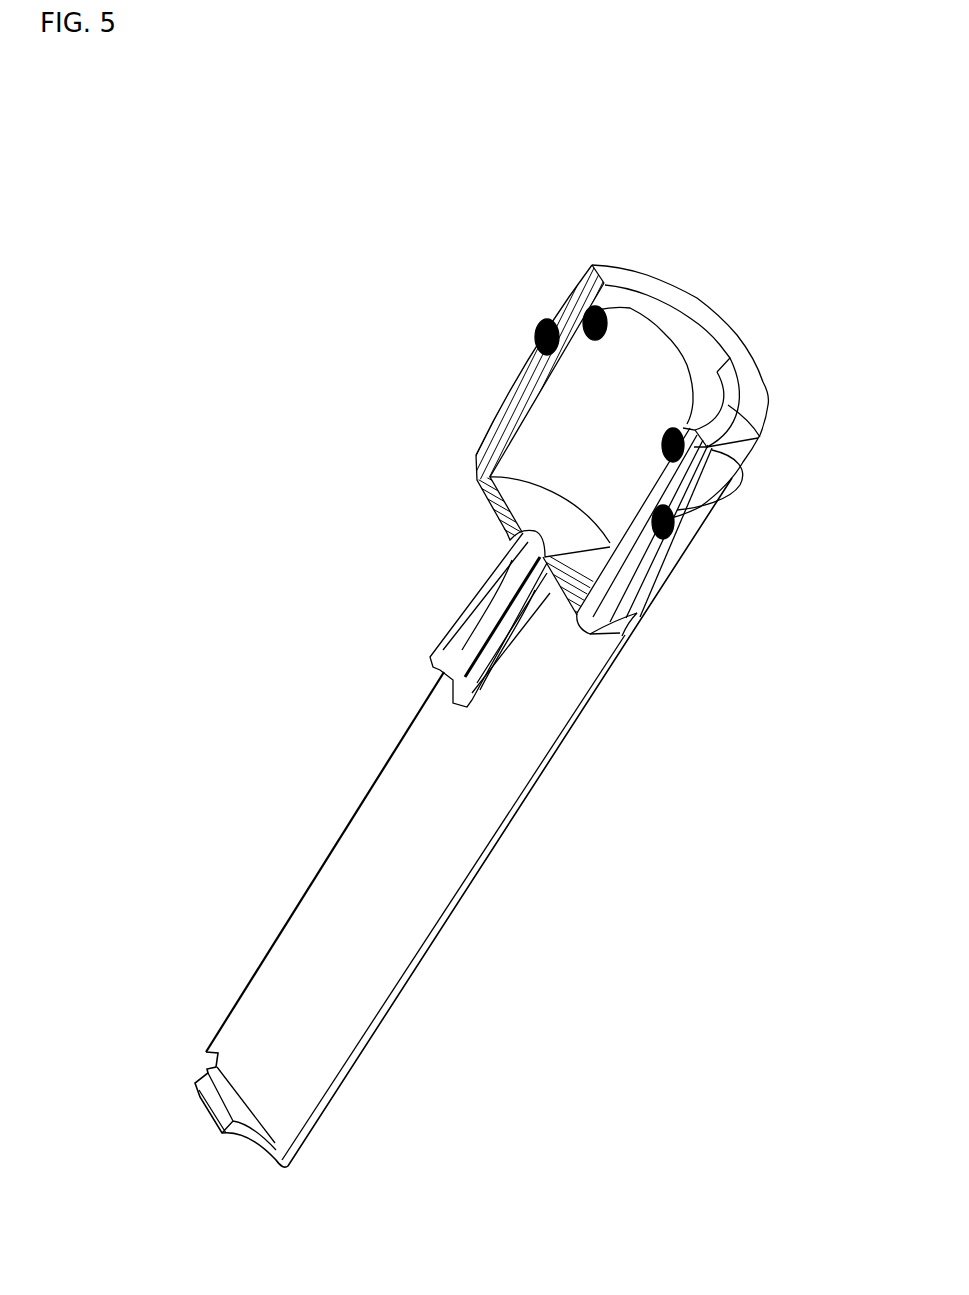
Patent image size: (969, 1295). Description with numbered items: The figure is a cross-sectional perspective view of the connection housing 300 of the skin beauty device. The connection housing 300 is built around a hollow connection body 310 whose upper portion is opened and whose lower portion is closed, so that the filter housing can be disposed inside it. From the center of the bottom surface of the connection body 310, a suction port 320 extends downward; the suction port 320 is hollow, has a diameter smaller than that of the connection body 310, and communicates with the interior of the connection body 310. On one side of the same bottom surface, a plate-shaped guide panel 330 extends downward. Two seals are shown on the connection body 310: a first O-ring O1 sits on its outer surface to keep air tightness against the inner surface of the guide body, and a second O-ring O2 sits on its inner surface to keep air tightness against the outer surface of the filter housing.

The connection housing 300 is at (275, 531).
The connection body 310 is at (492, 399).
The suction port 320 is at (460, 594).
The guide panel 330 is at (312, 932).
The first O-ring O1 is at (547, 328).
The second O-ring O2 is at (678, 346).